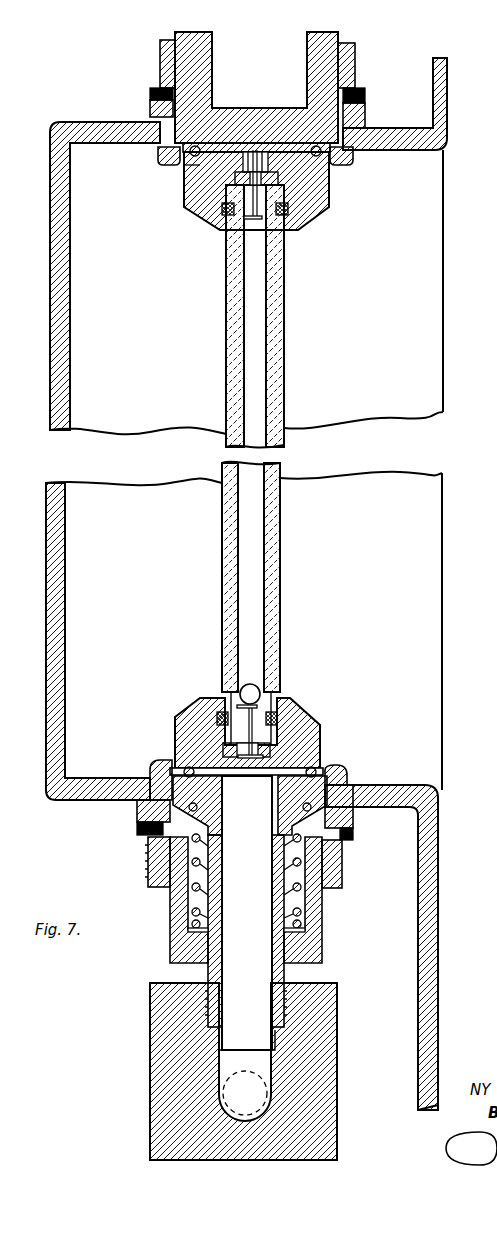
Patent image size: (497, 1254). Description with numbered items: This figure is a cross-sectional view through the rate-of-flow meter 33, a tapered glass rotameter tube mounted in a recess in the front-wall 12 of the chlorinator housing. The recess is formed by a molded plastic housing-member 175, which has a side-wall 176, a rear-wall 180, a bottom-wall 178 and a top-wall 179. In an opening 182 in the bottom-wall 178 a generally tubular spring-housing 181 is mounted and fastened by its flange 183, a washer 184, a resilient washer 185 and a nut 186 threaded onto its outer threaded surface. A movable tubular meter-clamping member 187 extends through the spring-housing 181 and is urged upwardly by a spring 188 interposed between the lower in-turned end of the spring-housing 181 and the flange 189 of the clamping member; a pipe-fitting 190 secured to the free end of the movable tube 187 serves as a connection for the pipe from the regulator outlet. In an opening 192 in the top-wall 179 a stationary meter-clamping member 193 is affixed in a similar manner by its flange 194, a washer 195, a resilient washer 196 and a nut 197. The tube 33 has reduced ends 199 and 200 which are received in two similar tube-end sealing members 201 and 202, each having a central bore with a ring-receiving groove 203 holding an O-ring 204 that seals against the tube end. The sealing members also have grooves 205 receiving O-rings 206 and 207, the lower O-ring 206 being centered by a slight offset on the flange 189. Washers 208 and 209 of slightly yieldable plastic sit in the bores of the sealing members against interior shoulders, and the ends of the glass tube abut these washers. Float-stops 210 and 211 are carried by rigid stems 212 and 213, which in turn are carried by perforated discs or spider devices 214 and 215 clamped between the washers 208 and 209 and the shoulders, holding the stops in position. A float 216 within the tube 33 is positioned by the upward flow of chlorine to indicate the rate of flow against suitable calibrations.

The front-wall 12 is at (426, 1057).
The rate-of-flow meter 33 is at (277, 368).
The housing-member 175 is at (180, 362).
The side-wall 176 is at (418, 557).
The bottom-wall 178 is at (410, 785).
The top-wall 179 is at (400, 150).
The rear-wall 180 is at (58, 575).
The spring-housing 181 is at (312, 930).
The opening 182 is at (157, 792).
The flange 183 is at (346, 772).
The washer 184 is at (353, 815).
The resilient washer 185 is at (353, 835).
The nut 186 is at (344, 860).
The meter-clamping member 187 is at (200, 925).
The spring 188 is at (306, 905).
The flange 189 is at (137, 828).
The pipe-fitting 190 is at (325, 1041).
The opening 192 is at (162, 133).
The stationary meter-clamping member 193 is at (338, 34).
The flange 194 is at (336, 160).
The washer 195 is at (366, 112).
The resilient washer 196 is at (362, 90).
The nut 197 is at (356, 52).
The reduced tube end 199 is at (222, 706).
The reduced tube end 200 is at (226, 236).
The tube-end sealing member 201 is at (320, 735).
The tube-end sealing member 202 is at (300, 190).
The ring-receiving groove 203 is at (220, 212).
The O-ring 204 is at (286, 213).
The ring-receiving groove 205 is at (184, 170).
The O-ring 206 is at (313, 772).
The O-ring 207 is at (345, 158).
The washer 208 is at (206, 769).
The washer 209 is at (278, 178).
The float-stop 210 is at (258, 706).
The float-stop 211 is at (255, 224).
The rigid stem 212 is at (268, 715).
The rigid stem 213 is at (260, 168).
The spider device 214 is at (249, 777).
The spider device 215 is at (250, 166).
The float 216 is at (259, 690).